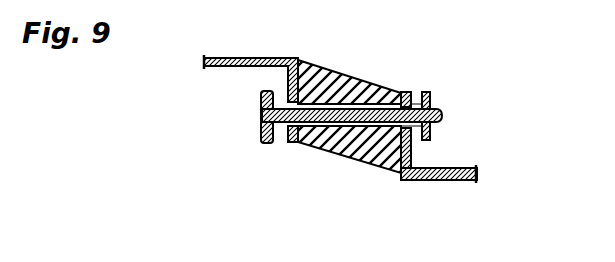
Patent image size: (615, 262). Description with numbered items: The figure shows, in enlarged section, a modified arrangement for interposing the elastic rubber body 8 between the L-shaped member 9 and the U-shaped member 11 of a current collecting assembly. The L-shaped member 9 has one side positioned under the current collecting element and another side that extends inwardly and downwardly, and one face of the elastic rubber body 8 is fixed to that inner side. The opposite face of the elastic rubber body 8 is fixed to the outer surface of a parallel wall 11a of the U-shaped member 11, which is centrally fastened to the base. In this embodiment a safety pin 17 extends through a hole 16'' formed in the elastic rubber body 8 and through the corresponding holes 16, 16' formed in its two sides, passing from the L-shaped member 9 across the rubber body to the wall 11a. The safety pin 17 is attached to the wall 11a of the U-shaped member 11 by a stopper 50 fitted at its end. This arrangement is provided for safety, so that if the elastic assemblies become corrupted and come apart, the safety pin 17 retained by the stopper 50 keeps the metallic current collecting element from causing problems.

The L-shaped member 9 is at (250, 66).
The hole 16 is at (246, 163).
The hole 16'' is at (359, 64).
The elastic rubber body 8 is at (322, 152).
The parallel wall 11a is at (412, 148).
The U-shaped member 11 is at (430, 180).
The hole 16' is at (458, 85).
The safety pin 17 is at (260, 118).
The stopper 50 is at (429, 106).